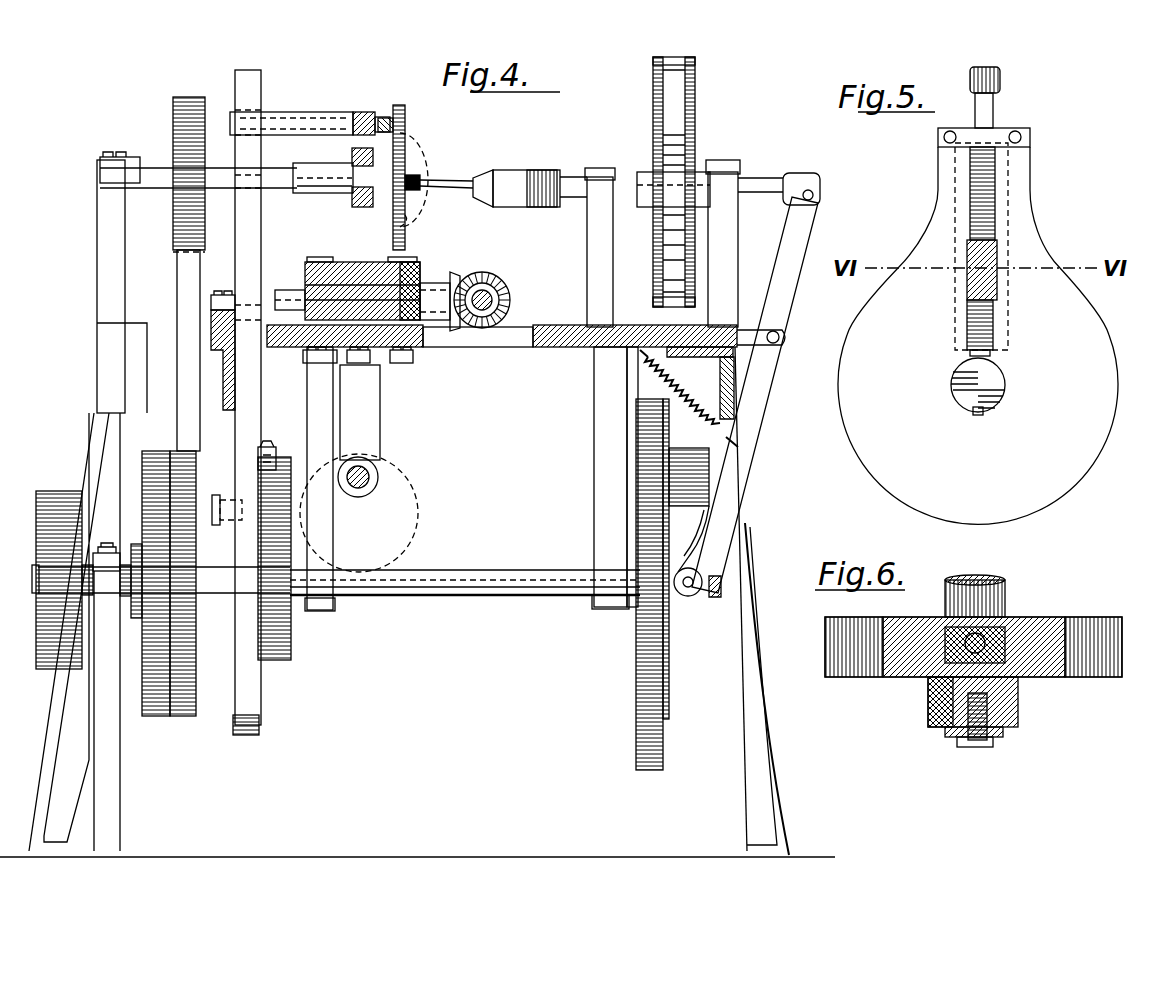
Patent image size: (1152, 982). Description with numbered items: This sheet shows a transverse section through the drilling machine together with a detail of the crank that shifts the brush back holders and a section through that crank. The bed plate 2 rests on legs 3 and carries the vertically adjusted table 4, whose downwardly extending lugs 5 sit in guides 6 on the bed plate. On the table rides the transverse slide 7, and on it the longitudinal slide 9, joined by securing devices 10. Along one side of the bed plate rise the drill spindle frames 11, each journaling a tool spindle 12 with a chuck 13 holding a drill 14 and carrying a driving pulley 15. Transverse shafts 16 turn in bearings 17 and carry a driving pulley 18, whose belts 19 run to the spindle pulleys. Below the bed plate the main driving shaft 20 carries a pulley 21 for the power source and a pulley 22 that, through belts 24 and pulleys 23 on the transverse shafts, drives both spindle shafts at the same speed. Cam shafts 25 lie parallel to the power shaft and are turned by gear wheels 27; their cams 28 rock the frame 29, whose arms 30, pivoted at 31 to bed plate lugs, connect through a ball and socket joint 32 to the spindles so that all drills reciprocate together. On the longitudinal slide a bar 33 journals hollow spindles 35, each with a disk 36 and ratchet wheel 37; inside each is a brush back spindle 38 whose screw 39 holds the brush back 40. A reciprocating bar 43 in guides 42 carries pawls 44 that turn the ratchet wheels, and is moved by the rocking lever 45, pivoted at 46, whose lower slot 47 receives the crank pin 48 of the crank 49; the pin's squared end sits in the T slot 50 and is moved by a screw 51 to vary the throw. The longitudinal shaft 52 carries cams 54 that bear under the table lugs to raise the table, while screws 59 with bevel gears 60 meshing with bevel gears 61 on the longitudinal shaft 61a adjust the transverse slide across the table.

In FIG. 4, the bed plate 2 is at (560, 348).
In FIG. 4, the legs 3 is at (50, 722).
In FIG. 4, the vertically adjusted table 4 is at (415, 318).
In FIG. 4, the downwardly extending lugs 5 is at (380, 409).
In FIG. 4, the guides 6 is at (390, 365).
In FIG. 4, the transverse slide 7 is at (420, 276).
In FIG. 4, the longitudinal slide 9 is at (366, 256).
In FIG. 4, the securing devices 10 is at (322, 258).
In FIG. 4, the drill spindle frames 11 is at (589, 267).
In FIG. 4, the tool spindle 12 is at (763, 195).
In FIG. 4, the chuck 13 is at (536, 208).
In FIG. 4, the drill 14 is at (467, 190).
In FIG. 4, the driving pulley 15 is at (650, 196).
In FIG. 4, the transverse shafts 16 is at (160, 190).
In FIG. 4, the bearings 17 is at (100, 235).
In FIG. 4, the driving pulley 18 is at (695, 106).
In FIG. 4, the belts 19 is at (682, 156).
In FIG. 4, the main driving shaft 20 is at (32, 578).
In FIG. 4, the pulley 21 is at (37, 548).
In FIG. 4, the pulley 22 is at (150, 488).
In FIG. 4, the pulleys 23 is at (176, 225).
In FIG. 4, the belts 24 is at (180, 270).
In FIG. 4, the cam shafts 25 is at (396, 597).
In FIG. 5, the cam shafts 25 is at (962, 395).
In FIG. 6, the cam shafts 25 is at (1005, 592).
In FIG. 4, the gear wheels 27 is at (648, 633).
In FIG. 4, the cams 28 is at (710, 500).
In FIG. 4, the frame 29 is at (713, 598).
In FIG. 4, the arms 30 is at (765, 410).
In FIG. 4, the pivot 31 is at (781, 338).
In FIG. 4, the ball and socket joint 32 is at (801, 174).
In FIG. 4, the bar 33 is at (363, 208).
In FIG. 4, the hollow spindles 35 is at (326, 193).
In FIG. 4, the disk 36 is at (399, 106).
In FIG. 4, the ratchet wheel 37 is at (410, 152).
In FIG. 4, the brush back spindle 38 is at (318, 172).
In FIG. 4, the screw 39 is at (423, 177).
In FIG. 4, the brush back 40 is at (416, 212).
In FIG. 4, the guides 42 is at (352, 112).
In FIG. 4, the reciprocating bar 43 is at (366, 112).
In FIG. 4, the pawls 44 is at (395, 128).
In FIG. 4, the rocking lever 45 is at (255, 74).
In FIG. 6, the rocking lever 45 is at (940, 697).
In FIG. 4, the pivot 46 is at (244, 300).
In FIG. 4, the slot 47 is at (257, 700).
In FIG. 6, the slot 47 is at (965, 712).
In FIG. 4, the crank pin 48 is at (240, 522).
In FIG. 5, the crank pin 48 is at (968, 278).
In FIG. 6, the crank pin 48 is at (1018, 698).
In FIG. 5, the crank 49 is at (1092, 323).
In FIG. 6, the crank 49 is at (1087, 617).
In FIG. 5, the T slot 50 is at (955, 164).
In FIG. 6, the T slot 50 is at (945, 628).
In FIG. 4, the screw 51 is at (272, 460).
In FIG. 5, the screw 51 is at (995, 182).
In FIG. 4, the longitudinal shaft 52 is at (372, 470).
In FIG. 4, the cams 54 is at (417, 506).
In FIG. 4, the screws 59 is at (292, 291).
In FIG. 4, the bevel gears 60 is at (455, 273).
In FIG. 4, the bevel gears 61 is at (490, 273).
In FIG. 4, the longitudinal shaft 61a is at (510, 300).